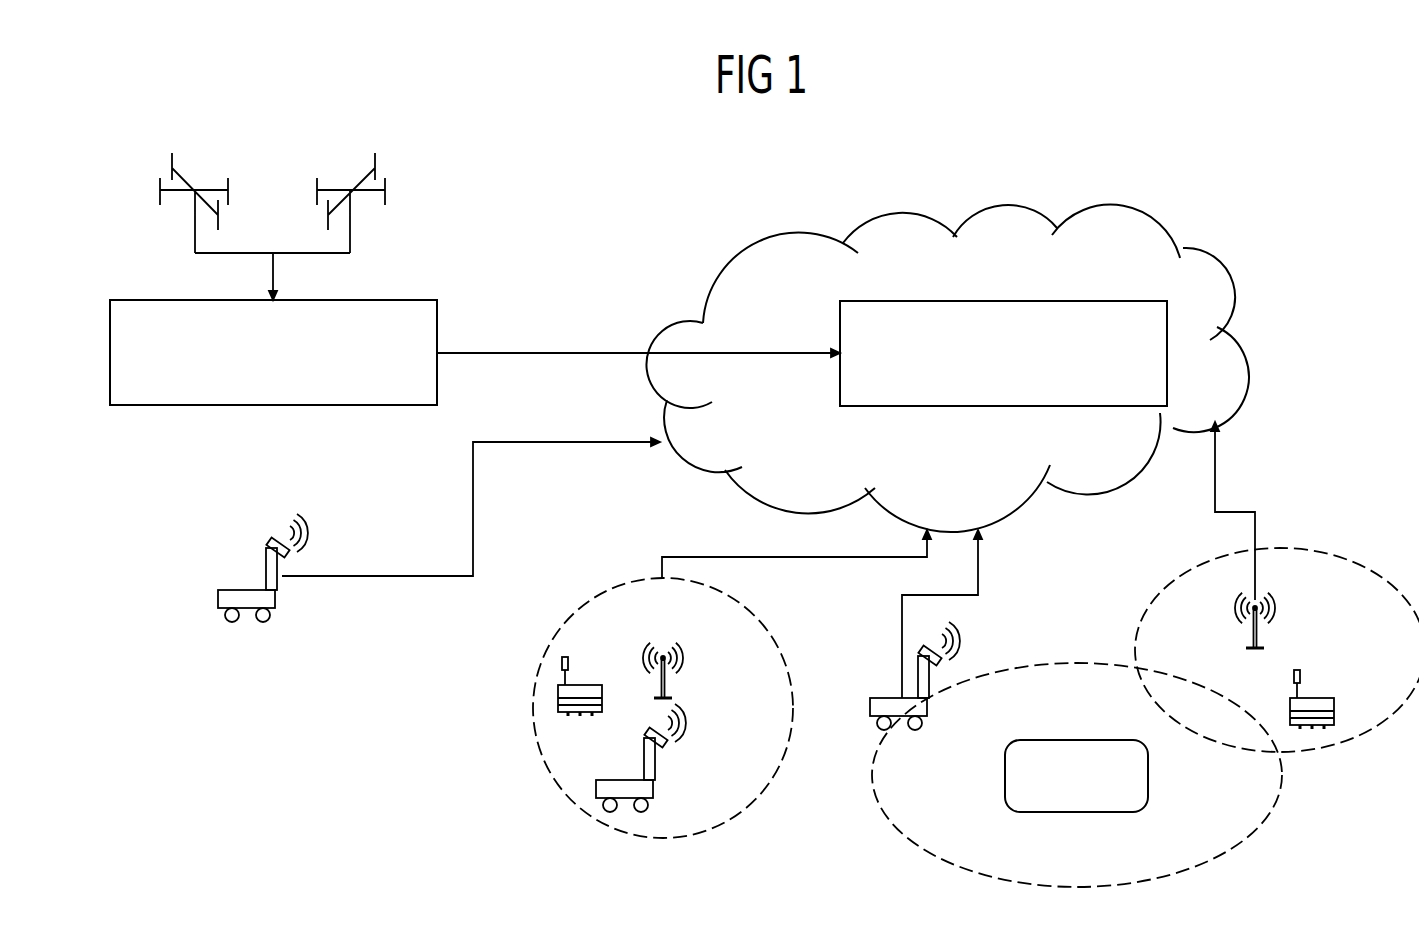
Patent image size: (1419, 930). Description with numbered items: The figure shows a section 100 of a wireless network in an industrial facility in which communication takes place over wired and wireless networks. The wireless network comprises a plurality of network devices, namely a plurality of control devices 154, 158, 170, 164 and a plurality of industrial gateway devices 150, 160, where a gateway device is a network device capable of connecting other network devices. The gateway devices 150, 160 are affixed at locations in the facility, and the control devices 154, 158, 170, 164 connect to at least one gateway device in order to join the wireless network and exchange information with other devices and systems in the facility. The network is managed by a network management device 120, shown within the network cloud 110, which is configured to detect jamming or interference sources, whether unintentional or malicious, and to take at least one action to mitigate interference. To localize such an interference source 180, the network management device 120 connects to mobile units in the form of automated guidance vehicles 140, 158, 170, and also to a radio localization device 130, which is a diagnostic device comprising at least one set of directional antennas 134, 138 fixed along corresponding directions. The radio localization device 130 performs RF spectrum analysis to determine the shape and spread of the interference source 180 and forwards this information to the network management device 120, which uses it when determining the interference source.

The section of wireless network 100 is at (1305, 198).
The network cloud 110 is at (905, 213).
The network management device 120 is at (1027, 372).
The radio localization device 130 is at (295, 370).
The first antenna 134 is at (160, 190).
The second antenna 138 is at (385, 190).
The automated guidance vehicle 140 is at (232, 588).
The industrial gateway device 150 is at (666, 678).
The control device 154 is at (558, 692).
The automated guidance vehicle 158 is at (596, 788).
The industrial gateway device 160 is at (1258, 635).
The control device 164 is at (1332, 705).
The automated guidance vehicle 170 is at (887, 695).
The interference source 180 is at (1102, 793).